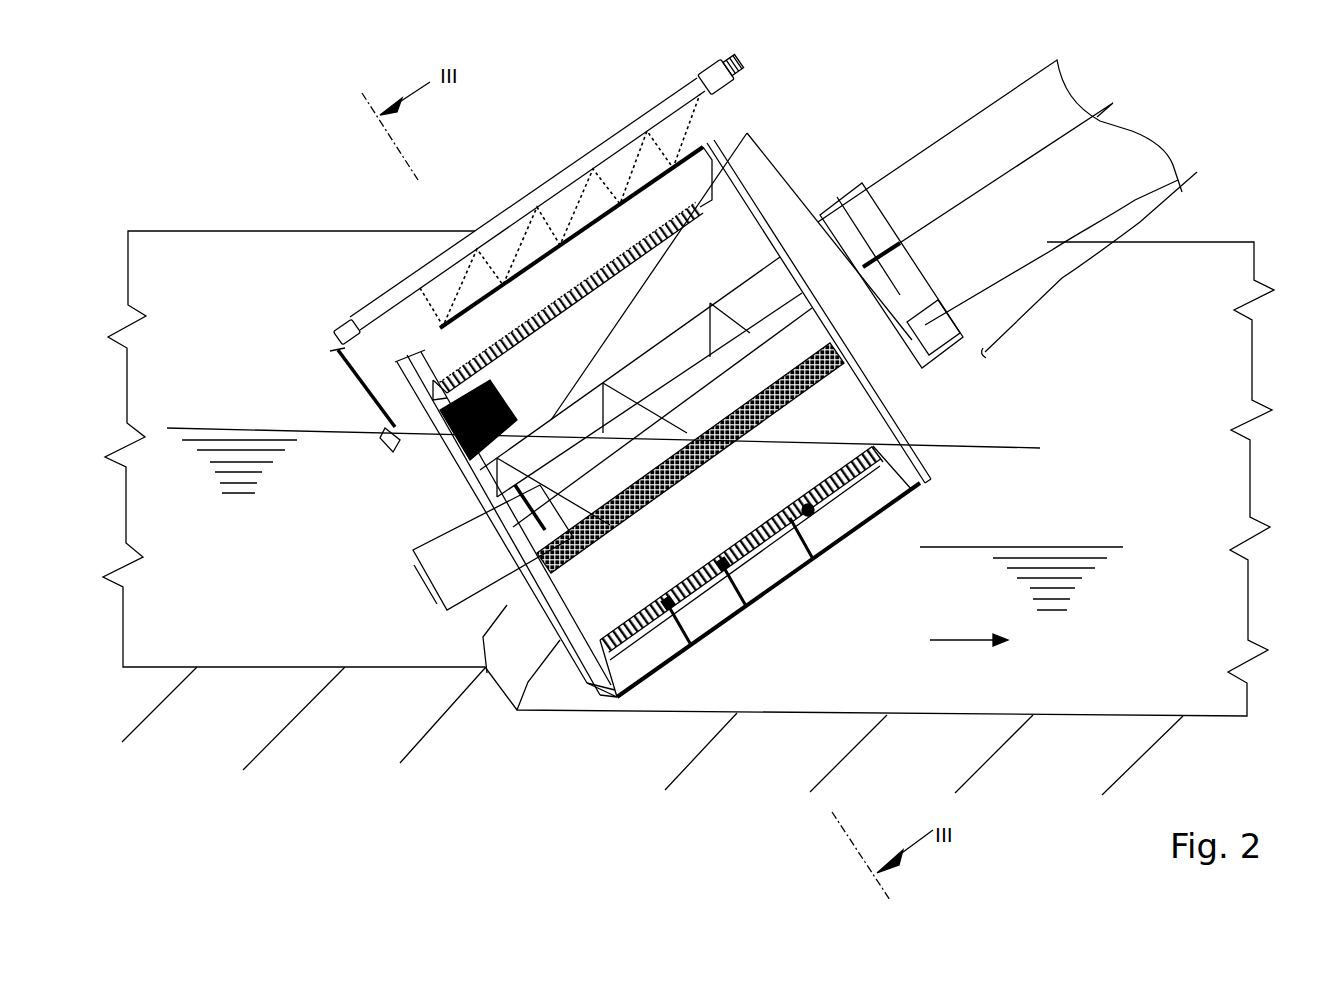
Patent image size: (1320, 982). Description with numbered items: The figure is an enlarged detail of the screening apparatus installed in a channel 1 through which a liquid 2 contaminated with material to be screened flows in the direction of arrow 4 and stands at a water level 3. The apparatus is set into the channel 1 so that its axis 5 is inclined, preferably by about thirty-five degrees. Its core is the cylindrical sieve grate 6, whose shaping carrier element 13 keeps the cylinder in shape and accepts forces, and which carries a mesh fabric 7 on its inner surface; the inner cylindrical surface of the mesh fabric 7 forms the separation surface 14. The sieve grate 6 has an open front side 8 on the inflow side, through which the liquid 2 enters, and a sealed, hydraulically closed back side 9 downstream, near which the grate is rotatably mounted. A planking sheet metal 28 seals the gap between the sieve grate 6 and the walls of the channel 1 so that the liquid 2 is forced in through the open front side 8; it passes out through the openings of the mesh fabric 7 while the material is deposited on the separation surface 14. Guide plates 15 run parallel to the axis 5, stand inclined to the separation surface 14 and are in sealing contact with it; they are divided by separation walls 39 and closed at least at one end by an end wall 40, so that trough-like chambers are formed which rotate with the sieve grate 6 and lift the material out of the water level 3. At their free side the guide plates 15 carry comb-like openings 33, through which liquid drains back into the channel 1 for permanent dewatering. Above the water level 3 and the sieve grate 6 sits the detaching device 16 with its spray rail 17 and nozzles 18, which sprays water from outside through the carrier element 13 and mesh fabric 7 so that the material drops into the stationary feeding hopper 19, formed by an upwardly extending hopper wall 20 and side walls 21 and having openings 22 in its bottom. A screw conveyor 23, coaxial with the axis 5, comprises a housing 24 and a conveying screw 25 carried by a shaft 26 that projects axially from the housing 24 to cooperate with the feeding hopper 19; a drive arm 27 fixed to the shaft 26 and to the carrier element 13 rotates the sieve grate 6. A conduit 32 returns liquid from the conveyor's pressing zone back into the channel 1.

The channel 1 is at (160, 268).
The liquid 2 is at (167, 545).
The water level 3 is at (212, 415).
The arrow 4 is at (970, 642).
The axis 5 is at (1017, 170).
The cylindrical sieve grate 6 is at (720, 634).
The mesh fabric 7 is at (450, 372).
The open front side 8 is at (528, 682).
The back side 9 is at (1040, 448).
The carrier element 13 is at (656, 685).
The separation surface 14 is at (505, 520).
The guide plates 15 is at (545, 400).
The detaching device 16 is at (586, 138).
The spray rail 17 is at (608, 147).
The nozzles 18 is at (643, 150).
The feeding hopper 19 is at (550, 273).
The hopper wall 20 is at (410, 427).
The side walls 21 is at (753, 300).
The openings 22 is at (487, 673).
The screw conveyor 23 is at (931, 120).
The housing 24 is at (973, 163).
The conveying screw 25 is at (730, 313).
The shaft 26 is at (780, 323).
The drive arm 27 is at (400, 450).
The planking sheet metal 28 is at (597, 712).
The conduit 32 is at (990, 356).
The openings 33 is at (808, 515).
The separation walls 39 is at (580, 247).
The end wall 40 is at (418, 375).